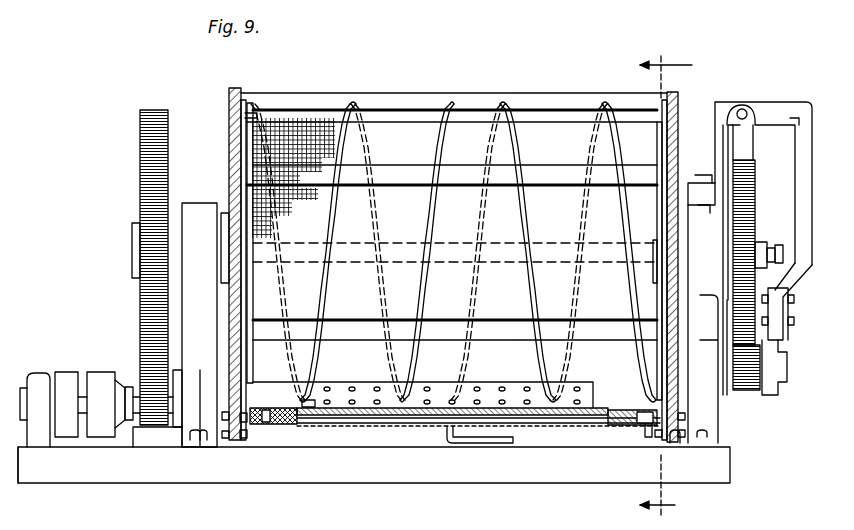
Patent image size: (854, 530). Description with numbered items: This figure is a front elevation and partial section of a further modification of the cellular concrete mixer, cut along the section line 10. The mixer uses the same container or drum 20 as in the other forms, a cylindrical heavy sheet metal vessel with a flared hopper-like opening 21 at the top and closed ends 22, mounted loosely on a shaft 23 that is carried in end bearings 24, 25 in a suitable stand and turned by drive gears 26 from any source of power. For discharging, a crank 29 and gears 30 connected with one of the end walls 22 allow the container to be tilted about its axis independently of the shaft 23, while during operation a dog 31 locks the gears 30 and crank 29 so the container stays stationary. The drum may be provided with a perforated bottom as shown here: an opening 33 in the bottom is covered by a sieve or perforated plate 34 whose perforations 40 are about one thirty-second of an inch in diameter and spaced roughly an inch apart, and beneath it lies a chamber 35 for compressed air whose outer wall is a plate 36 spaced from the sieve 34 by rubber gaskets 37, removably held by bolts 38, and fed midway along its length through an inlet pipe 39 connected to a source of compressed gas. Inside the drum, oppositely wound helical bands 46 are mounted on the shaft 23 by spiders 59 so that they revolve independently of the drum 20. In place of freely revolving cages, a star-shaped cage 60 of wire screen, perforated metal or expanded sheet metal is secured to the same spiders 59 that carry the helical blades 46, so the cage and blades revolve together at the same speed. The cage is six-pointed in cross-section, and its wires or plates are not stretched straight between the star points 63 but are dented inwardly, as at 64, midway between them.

The section line 10- 10 is at (653, 286).
The container 20 is at (548, 112).
The hopper-like opening 21 is at (415, 92).
The closed ends 22 is at (229, 103).
The shaft 23 is at (499, 264).
The end bearing 24 is at (198, 214).
The end bearing 25 is at (708, 408).
The gears 26 is at (140, 153).
The crank 29 is at (793, 217).
The gears 30 is at (755, 182).
The dog 31 is at (780, 108).
The opening 33 is at (315, 418).
The perforated plate 34 is at (340, 423).
The chamber 35 is at (372, 418).
The plate 36 is at (412, 426).
The rubber gaskets 37 is at (632, 425).
The bolts 38 is at (648, 432).
The inlet pipe 39 is at (487, 438).
The perforations 40 is at (330, 388).
The helical bands 46 is at (500, 103).
The spiders 59 is at (229, 144).
The star-shaped cage 60 is at (305, 140).
The star points 63 is at (397, 188).
The inward dents 64 is at (382, 163).